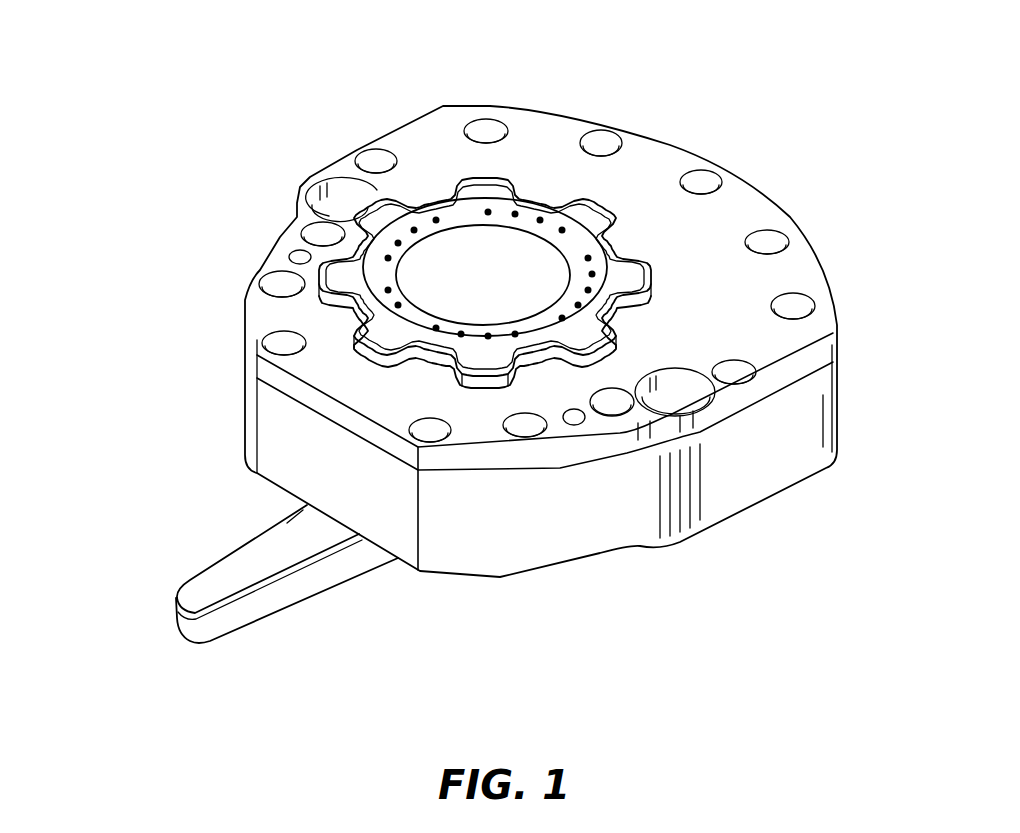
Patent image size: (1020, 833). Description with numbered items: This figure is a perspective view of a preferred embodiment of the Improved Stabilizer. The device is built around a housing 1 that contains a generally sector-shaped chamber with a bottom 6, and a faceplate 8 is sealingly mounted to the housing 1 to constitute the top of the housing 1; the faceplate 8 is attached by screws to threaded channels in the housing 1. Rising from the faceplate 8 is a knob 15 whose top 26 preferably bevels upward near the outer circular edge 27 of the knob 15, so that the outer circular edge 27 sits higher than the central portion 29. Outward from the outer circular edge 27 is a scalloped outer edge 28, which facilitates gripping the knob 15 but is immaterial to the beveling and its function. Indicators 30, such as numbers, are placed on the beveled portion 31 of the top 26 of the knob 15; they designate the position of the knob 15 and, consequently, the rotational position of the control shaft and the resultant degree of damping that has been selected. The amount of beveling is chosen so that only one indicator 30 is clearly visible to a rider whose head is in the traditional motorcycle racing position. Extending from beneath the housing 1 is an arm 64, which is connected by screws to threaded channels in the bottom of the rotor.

The housing 1 is at (203, 240).
The bottom 6 is at (623, 547).
The faceplate 8 is at (418, 140).
The knob 15 is at (440, 263).
The top 26 is at (515, 257).
The outer circular edge 27 is at (592, 207).
The scalloped outer edge 28 is at (477, 173).
The central portion 29 is at (482, 277).
The indicators 30 is at (613, 223).
The beveled portion 31 is at (590, 270).
The arm 64 is at (277, 547).